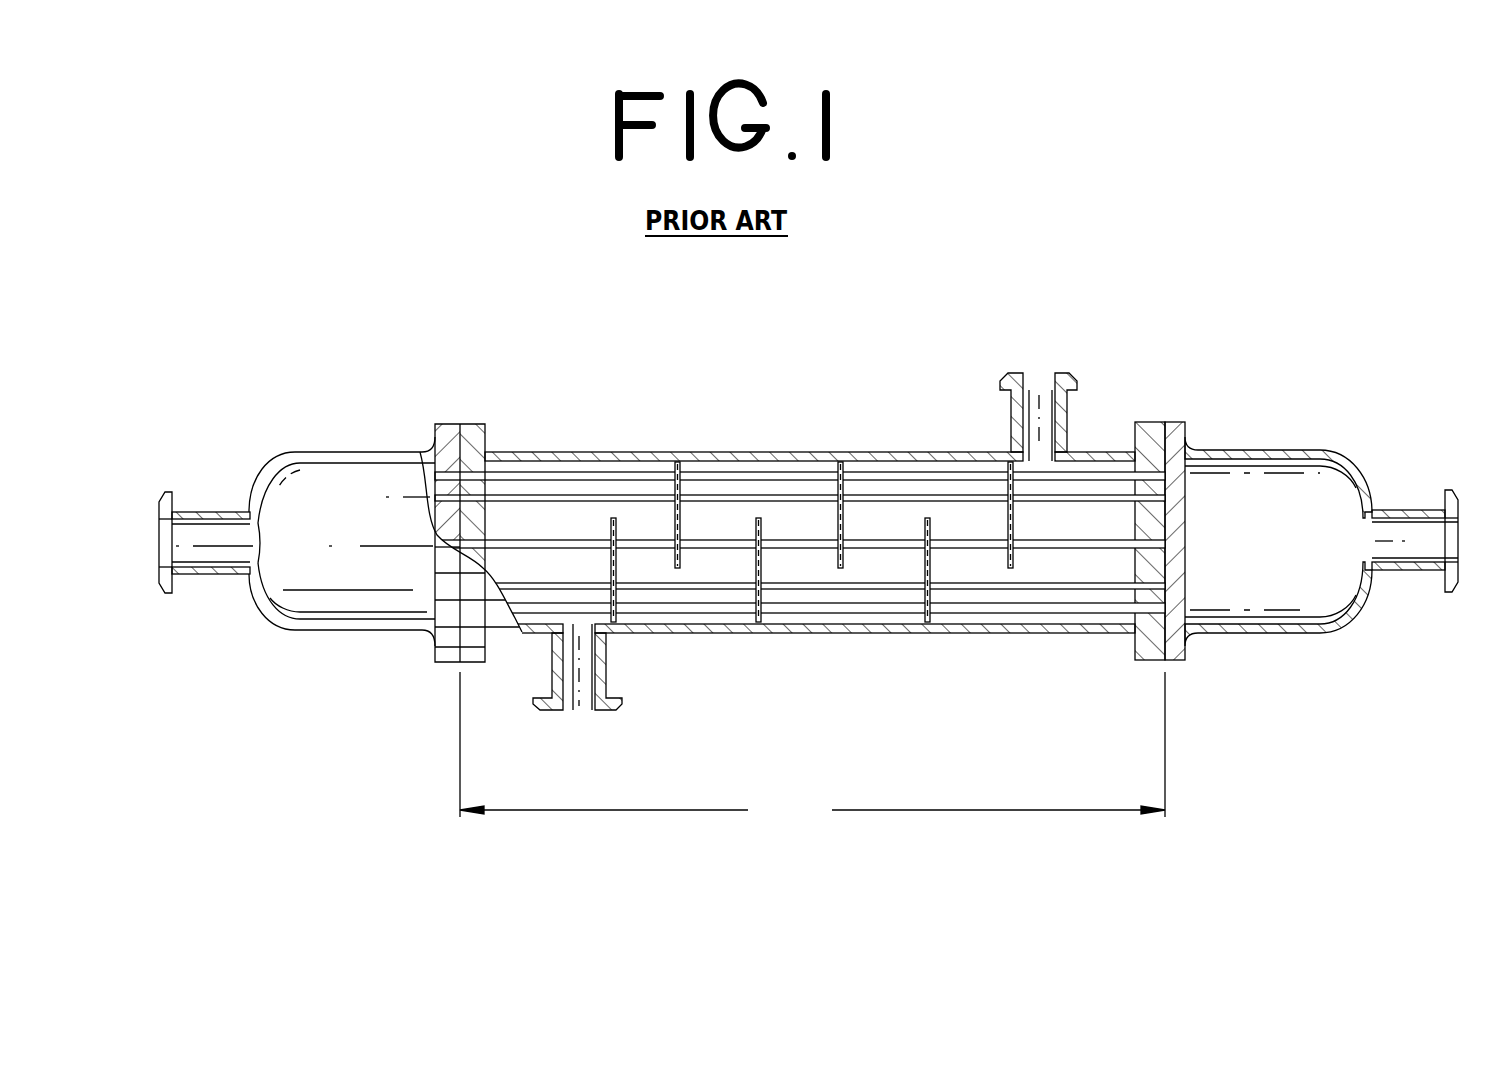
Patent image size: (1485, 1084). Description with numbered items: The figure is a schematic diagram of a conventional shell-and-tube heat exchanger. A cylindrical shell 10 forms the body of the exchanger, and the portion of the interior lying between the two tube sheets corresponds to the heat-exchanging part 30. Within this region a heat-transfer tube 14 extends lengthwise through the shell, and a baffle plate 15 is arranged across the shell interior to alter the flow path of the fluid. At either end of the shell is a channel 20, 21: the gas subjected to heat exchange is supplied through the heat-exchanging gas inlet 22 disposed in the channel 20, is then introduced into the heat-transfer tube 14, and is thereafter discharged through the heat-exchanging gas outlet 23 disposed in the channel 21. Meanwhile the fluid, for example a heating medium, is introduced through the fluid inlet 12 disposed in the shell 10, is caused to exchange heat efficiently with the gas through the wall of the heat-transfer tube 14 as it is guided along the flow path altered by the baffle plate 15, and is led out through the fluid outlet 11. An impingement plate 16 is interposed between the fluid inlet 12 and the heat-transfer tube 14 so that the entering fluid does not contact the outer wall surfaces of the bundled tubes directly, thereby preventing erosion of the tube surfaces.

The shell 10 is at (797, 452).
The fluid outlet 11 is at (1035, 372).
The fluid inlet 12 is at (605, 712).
The heat-transfer tube 14 is at (620, 495).
The baffle plate 15 is at (760, 560).
The impingement plate 16 is at (560, 613).
The channel 20 is at (1338, 450).
The channel 21 is at (292, 452).
The heat-exchanging gas inlet 22 is at (1417, 572).
The heat-exchanging gas outlet 23 is at (212, 567).
The heat-exchanging part 30 is at (812, 750).